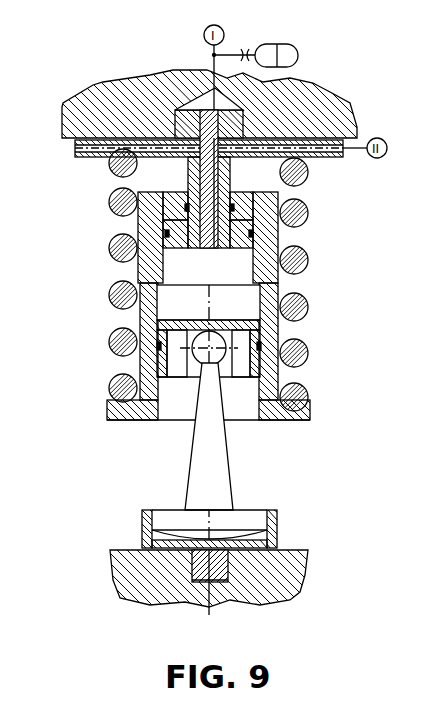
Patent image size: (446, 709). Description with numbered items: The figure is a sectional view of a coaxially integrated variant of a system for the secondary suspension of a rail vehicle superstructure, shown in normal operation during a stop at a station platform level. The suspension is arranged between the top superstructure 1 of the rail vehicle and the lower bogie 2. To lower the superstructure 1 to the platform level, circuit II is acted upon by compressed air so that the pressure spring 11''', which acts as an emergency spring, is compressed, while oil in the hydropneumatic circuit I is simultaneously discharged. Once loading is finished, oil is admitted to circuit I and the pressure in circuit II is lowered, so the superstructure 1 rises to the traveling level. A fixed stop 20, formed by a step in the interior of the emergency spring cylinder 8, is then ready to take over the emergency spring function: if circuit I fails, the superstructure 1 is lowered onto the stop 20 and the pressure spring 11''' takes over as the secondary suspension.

The superstructure 1 is at (150, 100).
The bogie 2 is at (143, 577).
The emergency spring cylinder 8 is at (338, 344).
The pressure spring 11''' is at (175, 280).
The fixed stop 20 is at (263, 298).